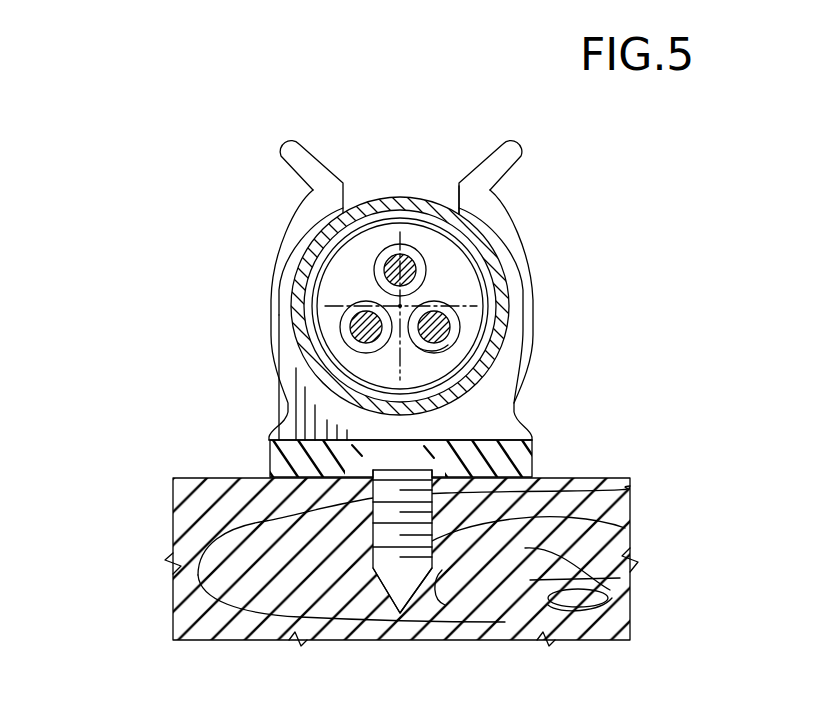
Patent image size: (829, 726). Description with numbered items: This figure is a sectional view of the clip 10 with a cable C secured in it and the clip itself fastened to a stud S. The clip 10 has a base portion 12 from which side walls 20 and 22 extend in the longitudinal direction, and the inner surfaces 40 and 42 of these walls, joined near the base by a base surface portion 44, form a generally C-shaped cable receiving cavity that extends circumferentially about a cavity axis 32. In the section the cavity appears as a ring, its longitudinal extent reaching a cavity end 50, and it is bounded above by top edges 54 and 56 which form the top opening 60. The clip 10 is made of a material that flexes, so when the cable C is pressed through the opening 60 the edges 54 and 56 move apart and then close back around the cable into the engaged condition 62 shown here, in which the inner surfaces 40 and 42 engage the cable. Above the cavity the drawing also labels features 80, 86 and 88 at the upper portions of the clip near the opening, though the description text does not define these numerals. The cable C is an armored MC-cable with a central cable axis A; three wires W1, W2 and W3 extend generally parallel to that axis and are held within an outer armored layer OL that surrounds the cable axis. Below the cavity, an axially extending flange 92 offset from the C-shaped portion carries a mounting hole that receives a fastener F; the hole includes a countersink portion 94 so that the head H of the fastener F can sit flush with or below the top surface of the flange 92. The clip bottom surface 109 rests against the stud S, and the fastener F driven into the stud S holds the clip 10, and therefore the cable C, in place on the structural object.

The clip 10 is at (248, 265).
The base portion 12 is at (270, 470).
The side wall 20 is at (268, 316).
The side wall 22 is at (534, 298).
The cavity axis 32 is at (446, 322).
The inner surface 40 is at (290, 302).
The inner surface 42 is at (452, 348).
The base surface portion 44 is at (420, 411).
The cavity end 50 is at (290, 330).
The top edge 54 is at (345, 198).
The top edge 56 is at (460, 200).
The top opening 60 is at (447, 111).
The engaged condition 62 is at (543, 190).
The inner liner 80 is at (318, 227).
The left spring finger 86 is at (291, 151).
The right spring finger 88 is at (511, 151).
The flange 92 is at (270, 462).
The countersink portion 94 is at (360, 453).
The clip bottom surface 109 is at (605, 593).
The cable axis A is at (400, 270).
The cable C is at (384, 313).
The fastener F is at (410, 450).
The head H is at (433, 476).
The outer armored layer OL is at (320, 255).
The stud S is at (633, 543).
The wire W1 is at (370, 338).
The wire W2 is at (430, 270).
The wire W3 is at (442, 354).